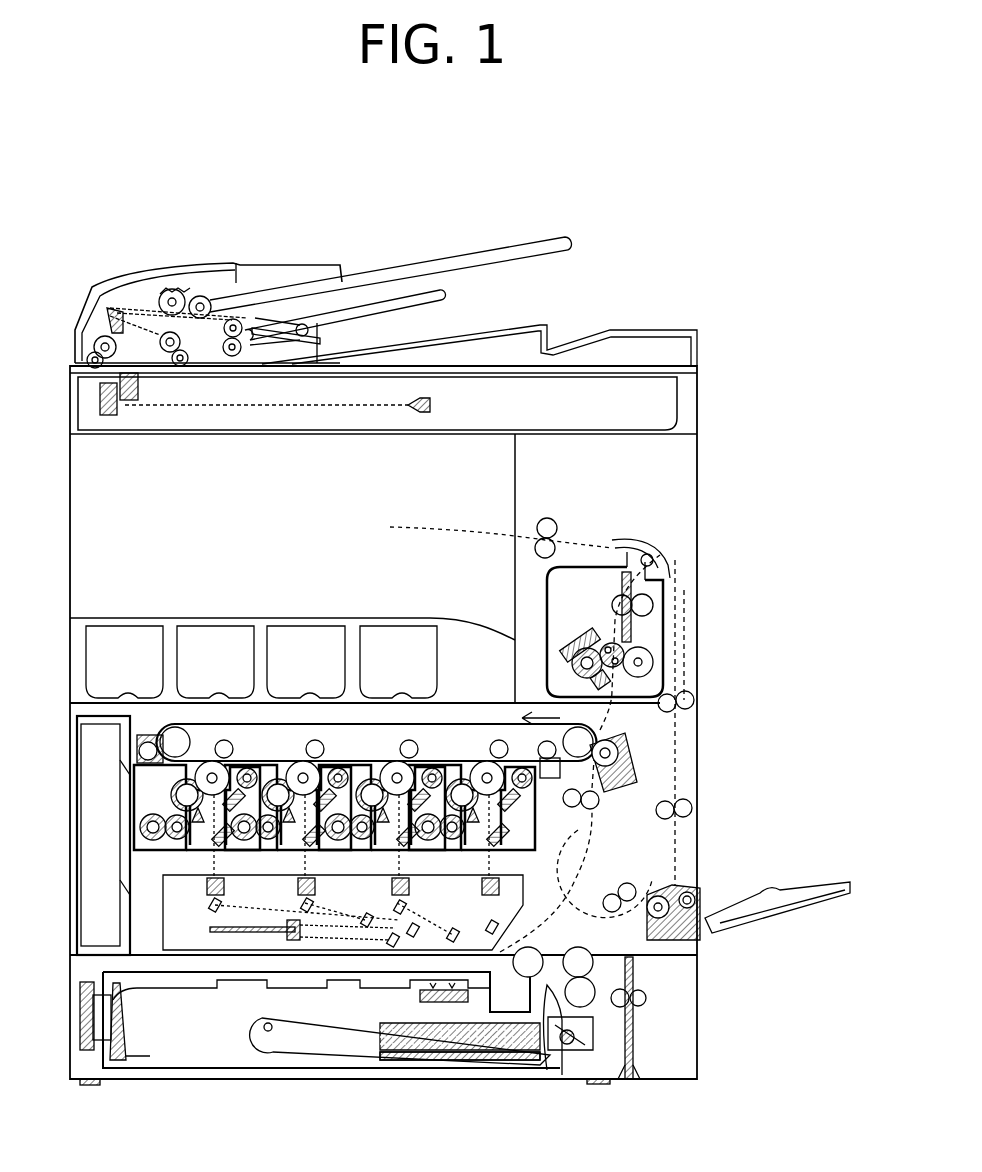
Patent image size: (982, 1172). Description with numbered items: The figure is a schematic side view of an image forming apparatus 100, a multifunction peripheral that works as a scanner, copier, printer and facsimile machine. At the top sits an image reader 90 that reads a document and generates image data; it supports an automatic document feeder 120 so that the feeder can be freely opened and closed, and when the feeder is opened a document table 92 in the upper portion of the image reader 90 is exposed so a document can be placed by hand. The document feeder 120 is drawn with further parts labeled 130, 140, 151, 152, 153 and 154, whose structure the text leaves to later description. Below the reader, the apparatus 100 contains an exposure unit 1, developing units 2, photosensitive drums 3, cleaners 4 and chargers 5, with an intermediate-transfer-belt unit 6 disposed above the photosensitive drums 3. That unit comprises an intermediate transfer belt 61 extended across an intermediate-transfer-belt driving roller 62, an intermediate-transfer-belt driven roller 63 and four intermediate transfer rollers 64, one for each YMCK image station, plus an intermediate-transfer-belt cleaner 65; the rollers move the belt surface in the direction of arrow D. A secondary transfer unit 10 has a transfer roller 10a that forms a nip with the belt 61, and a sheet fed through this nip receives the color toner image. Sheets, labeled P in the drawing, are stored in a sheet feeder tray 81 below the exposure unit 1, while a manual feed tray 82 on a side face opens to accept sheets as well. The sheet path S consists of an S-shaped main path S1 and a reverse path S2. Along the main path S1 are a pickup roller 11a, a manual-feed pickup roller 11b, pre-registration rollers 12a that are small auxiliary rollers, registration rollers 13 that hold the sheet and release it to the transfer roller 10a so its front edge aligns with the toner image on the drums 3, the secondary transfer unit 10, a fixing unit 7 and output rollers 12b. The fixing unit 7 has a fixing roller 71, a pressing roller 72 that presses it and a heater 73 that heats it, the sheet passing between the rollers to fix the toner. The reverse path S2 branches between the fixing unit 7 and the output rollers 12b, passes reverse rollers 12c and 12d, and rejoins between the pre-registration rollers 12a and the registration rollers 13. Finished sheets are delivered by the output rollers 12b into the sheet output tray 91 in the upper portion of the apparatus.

The image forming apparatus 100 is at (690, 308).
The automatic document feeder 120 is at (168, 270).
The document tray 130 is at (410, 263).
The platen cover 140 is at (535, 326).
The conveyance roller 151 is at (255, 318).
The conveyance roller 152 is at (235, 318).
The discharge roller 153 is at (112, 300).
The feed roller 154 is at (180, 295).
The document table 92 is at (462, 364).
The image reader 90 is at (680, 395).
The sheet output tray 91 is at (290, 615).
The output rollers 12b is at (548, 518).
The fixing unit 7 is at (664, 632).
The fixing roller 71 is at (630, 650).
The pressing roller 72 is at (654, 662).
The heater 73 is at (598, 648).
The reverse roller 12c is at (695, 703).
The intermediate-transfer-belt unit 6 is at (455, 720).
The intermediate transfer belt 61 is at (496, 742).
The intermediate-transfer-belt driving roller 62 is at (592, 736).
The intermediate-transfer-belt driven roller 63 is at (178, 740).
The intermediate-transfer-belt cleaner 65 is at (150, 733).
The belt moving direction D is at (540, 714).
The developing unit 2 is at (166, 848).
The photosensitive drum 3 is at (211, 760).
The cleaner 4 is at (240, 758).
The charger 5 is at (212, 845).
The intermediate transfer roller 64 is at (240, 755).
The secondary transfer unit 10 is at (618, 776).
The transfer roller 10a is at (622, 760).
The registration rollers 13 is at (600, 806).
The reverse roller 12d is at (694, 809).
The pre-registration rollers 12a is at (636, 895).
The pickup roller 11a is at (532, 948).
The manual-feed pickup roller 11b is at (702, 900).
The manual feed tray 82 is at (790, 888).
The sheet feeder tray 81 is at (335, 1028).
The exposure unit 1 is at (545, 905).
The sheet P is at (400, 1024).
The sheet path S is at (572, 872).
The main path S1 is at (572, 850).
The reverse path S2 is at (683, 745).